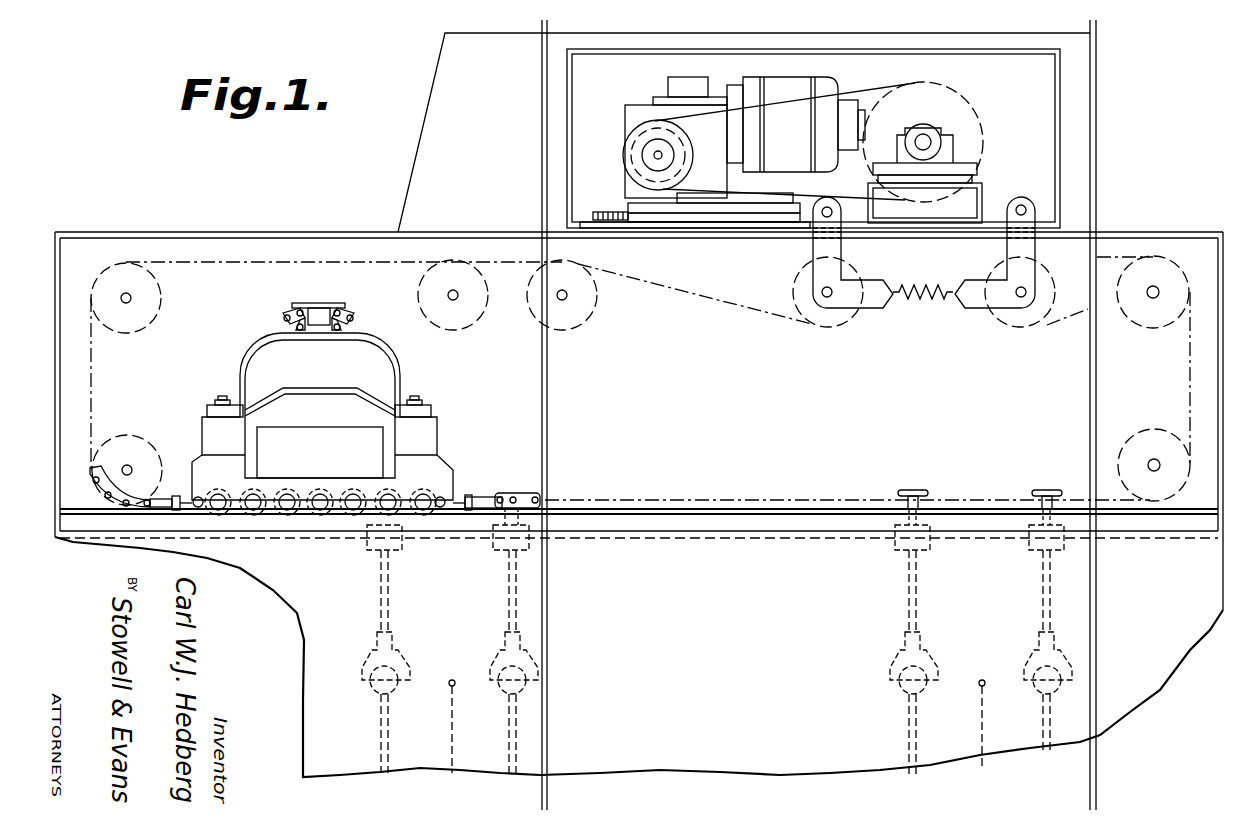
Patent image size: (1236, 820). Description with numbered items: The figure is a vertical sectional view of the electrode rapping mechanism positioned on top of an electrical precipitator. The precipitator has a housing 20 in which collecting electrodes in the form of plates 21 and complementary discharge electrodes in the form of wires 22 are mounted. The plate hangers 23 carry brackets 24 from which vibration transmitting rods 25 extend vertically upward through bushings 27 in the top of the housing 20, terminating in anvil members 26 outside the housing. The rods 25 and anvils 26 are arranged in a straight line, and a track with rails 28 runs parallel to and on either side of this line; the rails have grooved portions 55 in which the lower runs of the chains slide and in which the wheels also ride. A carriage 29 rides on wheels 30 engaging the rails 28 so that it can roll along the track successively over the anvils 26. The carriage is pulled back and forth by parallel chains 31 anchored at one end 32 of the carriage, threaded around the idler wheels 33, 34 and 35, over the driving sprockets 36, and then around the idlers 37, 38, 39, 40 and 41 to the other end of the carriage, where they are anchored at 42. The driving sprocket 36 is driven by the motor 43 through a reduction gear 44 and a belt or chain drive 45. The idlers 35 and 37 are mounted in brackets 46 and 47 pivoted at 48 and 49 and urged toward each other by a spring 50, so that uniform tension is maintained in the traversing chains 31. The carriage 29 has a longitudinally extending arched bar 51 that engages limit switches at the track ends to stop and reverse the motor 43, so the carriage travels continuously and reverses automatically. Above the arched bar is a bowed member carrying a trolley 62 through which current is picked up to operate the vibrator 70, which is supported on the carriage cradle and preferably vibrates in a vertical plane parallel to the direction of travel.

The housing 20 is at (722, 538).
The plates 21 is at (380, 760).
The wires 22 is at (453, 704).
The plate hangers 23 is at (380, 690).
The brackets 24 is at (494, 672).
The vibration transmitting rods 25 is at (382, 600).
The anvil members 26 is at (510, 492).
The bushings 27 is at (495, 540).
The rails 28 is at (736, 536).
The carriage 29 is at (447, 458).
The wheels 30 is at (396, 496).
The chains 31 is at (96, 474).
The end of the carriage 32 is at (481, 496).
The idler wheel 33 is at (1152, 446).
The idler wheel 34 is at (1150, 318).
The idler wheel 35 is at (1010, 322).
The driving sprocket 36 is at (957, 118).
The idler wheel 37 is at (842, 322).
The idler wheel 38 is at (585, 282).
The idler wheel 39 is at (470, 302).
The idler wheel 40 is at (150, 290).
The idler wheel 41 is at (137, 458).
The anchor point 42 is at (185, 497).
The motor 43 is at (820, 86).
The reduction gear 44 is at (643, 108).
The belt or chain drive 45 is at (795, 106).
The bracket 46 is at (1022, 248).
The bracket 47 is at (810, 247).
The pivot 48 is at (1020, 206).
The pivot 49 is at (828, 207).
The spring 50 is at (928, 300).
The arched bar 51 is at (321, 392).
The grooved portions 55 is at (656, 502).
The trolley 62 is at (318, 305).
The vibrator 70 is at (290, 446).